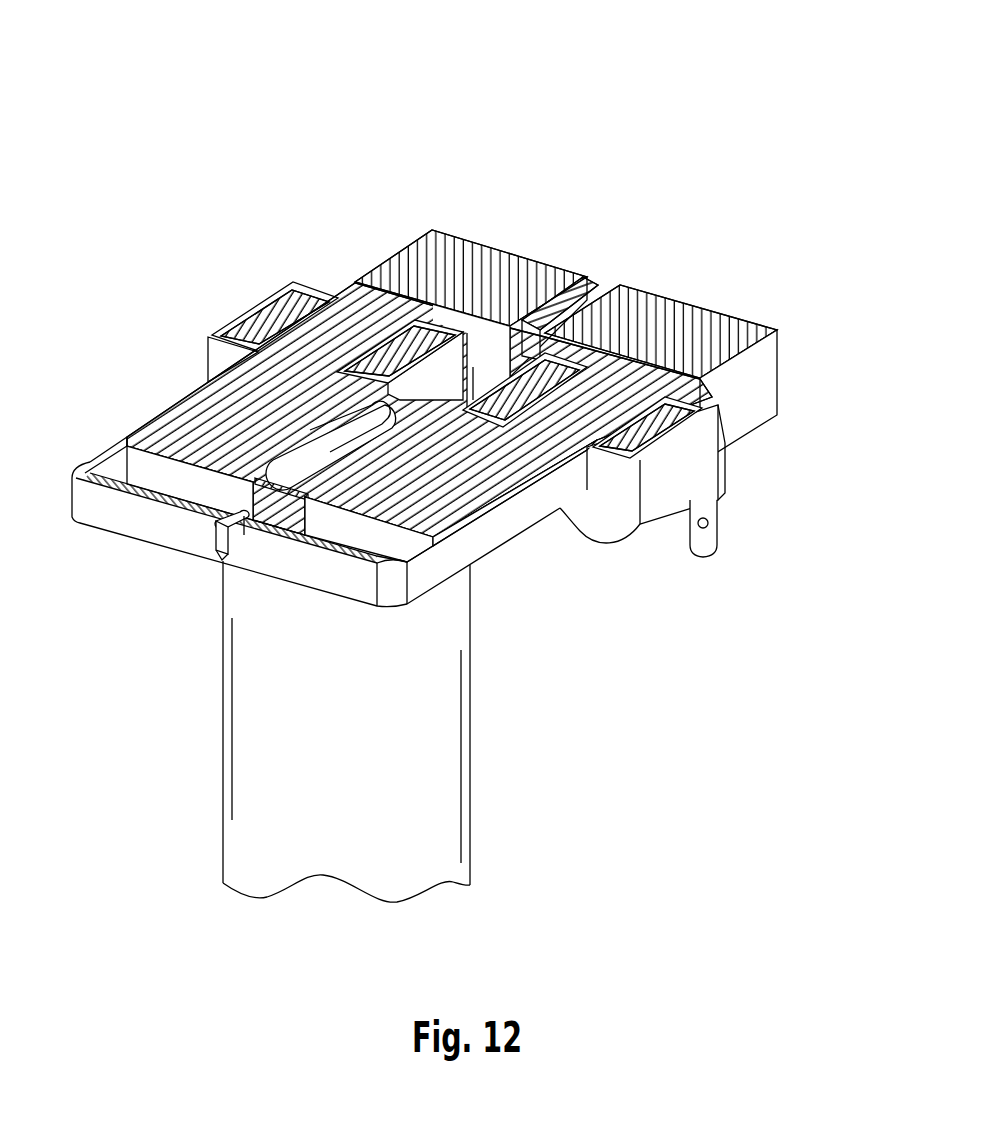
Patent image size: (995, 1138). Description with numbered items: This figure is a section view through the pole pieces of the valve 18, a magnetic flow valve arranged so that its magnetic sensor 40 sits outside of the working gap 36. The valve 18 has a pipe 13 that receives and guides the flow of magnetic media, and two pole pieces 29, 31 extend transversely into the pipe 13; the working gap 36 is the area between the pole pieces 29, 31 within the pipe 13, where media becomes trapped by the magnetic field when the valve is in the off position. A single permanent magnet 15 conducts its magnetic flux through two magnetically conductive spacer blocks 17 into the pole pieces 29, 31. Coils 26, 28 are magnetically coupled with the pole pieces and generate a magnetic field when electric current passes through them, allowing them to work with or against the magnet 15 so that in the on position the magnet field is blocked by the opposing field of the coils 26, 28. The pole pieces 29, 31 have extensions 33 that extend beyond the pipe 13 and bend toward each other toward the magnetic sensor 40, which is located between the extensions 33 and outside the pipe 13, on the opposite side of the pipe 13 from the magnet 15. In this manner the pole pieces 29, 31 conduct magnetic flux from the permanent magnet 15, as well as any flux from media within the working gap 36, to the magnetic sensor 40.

The valve 18 is at (200, 130).
The magnetically conductive spacer blocks 17 is at (405, 250).
The permanent magnet 15 is at (597, 290).
The coil 26 is at (272, 296).
The working gap 36 is at (323, 473).
The pole piece 29 is at (133, 441).
The pole piece 31 is at (470, 495).
The coil 28 is at (688, 465).
The extensions 33 is at (130, 520).
The magnetic sensor 40 is at (220, 542).
The pipe 13 is at (445, 745).